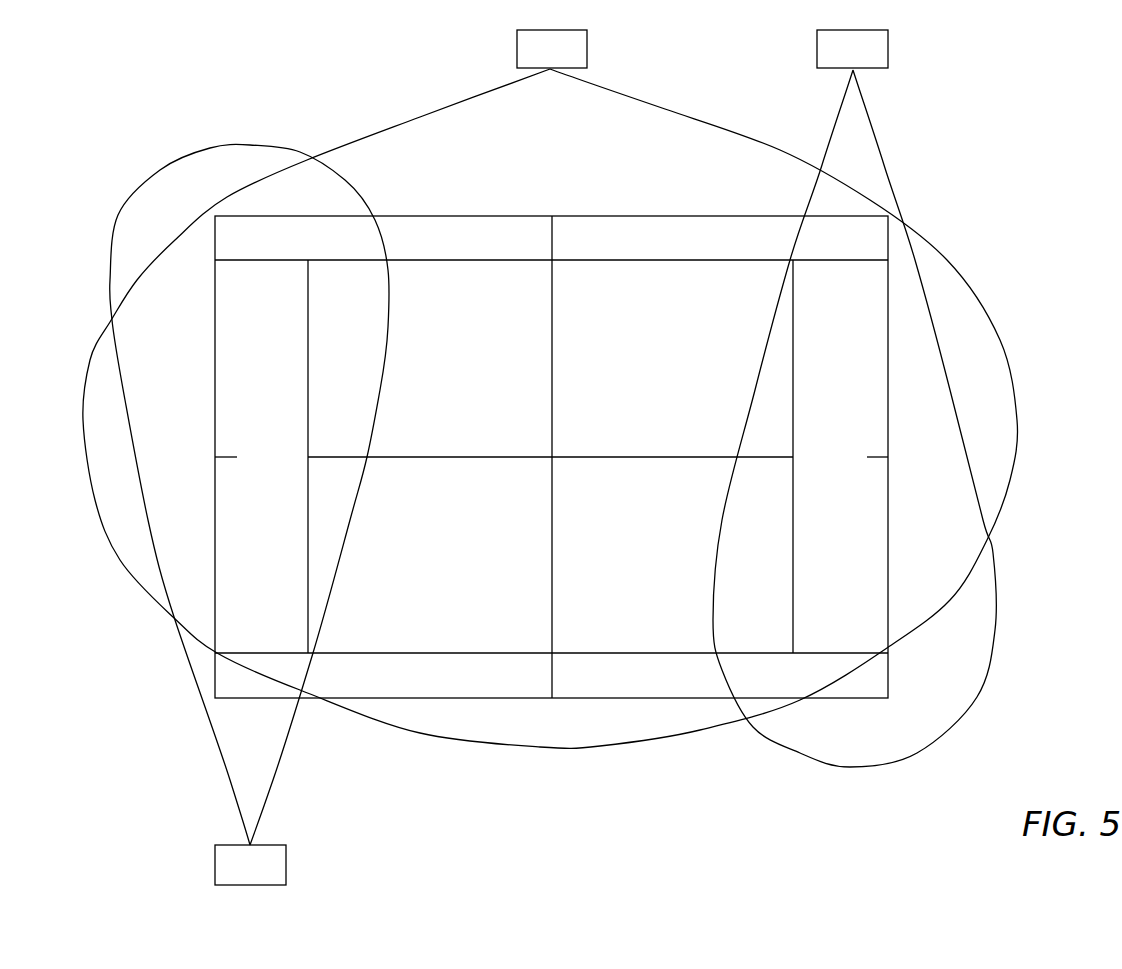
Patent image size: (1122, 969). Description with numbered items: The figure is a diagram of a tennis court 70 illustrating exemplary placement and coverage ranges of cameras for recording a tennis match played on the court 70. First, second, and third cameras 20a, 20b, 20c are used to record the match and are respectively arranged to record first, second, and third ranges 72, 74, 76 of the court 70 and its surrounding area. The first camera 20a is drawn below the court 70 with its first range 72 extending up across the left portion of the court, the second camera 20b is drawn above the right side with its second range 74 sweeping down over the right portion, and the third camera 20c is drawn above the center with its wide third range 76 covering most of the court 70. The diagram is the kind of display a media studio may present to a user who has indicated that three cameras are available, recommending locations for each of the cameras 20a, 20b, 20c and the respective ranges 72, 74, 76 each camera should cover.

The first camera 20a is at (250, 865).
The second camera 20b is at (852, 49).
The third camera 20c is at (552, 49).
The tennis court 70 is at (265, 240).
The first range 72 is at (157, 225).
The second range 74 is at (943, 668).
The third range 76 is at (452, 153).